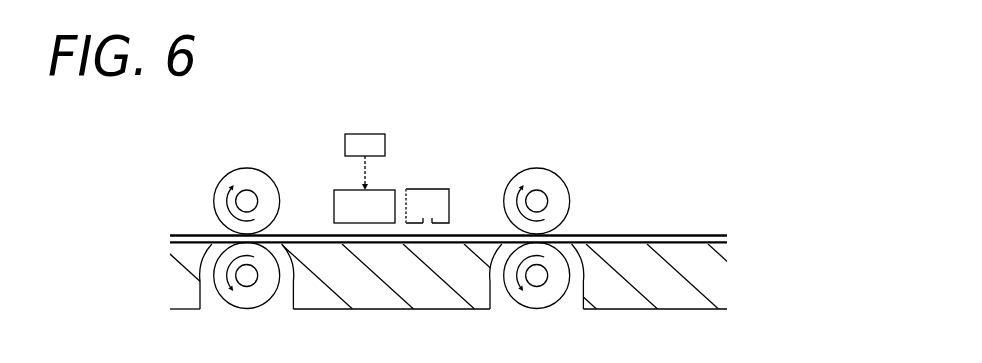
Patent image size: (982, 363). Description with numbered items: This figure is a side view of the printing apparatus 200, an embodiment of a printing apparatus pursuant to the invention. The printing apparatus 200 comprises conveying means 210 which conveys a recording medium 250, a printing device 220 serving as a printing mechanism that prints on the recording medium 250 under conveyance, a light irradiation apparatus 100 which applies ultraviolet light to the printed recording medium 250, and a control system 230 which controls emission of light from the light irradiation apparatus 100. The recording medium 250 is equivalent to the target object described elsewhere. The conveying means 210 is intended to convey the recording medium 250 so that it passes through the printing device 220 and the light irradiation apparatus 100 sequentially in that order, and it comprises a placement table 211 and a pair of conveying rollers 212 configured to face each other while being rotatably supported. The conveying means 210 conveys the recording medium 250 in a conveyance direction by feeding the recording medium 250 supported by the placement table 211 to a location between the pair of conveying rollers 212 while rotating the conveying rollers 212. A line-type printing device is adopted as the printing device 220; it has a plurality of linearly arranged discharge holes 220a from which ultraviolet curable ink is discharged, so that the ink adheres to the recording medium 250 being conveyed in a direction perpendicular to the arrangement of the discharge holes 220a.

The image forming unit 100 is at (337, 186).
The printing apparatus 200 is at (599, 120).
The conveying means 210 is at (604, 190).
The placement table 211 is at (587, 254).
The pair of conveying rollers 212 is at (557, 201).
The printing device 220 is at (413, 186).
The discharge holes 220a is at (435, 220).
The control system 230 is at (377, 145).
The recording medium 250 is at (674, 239).